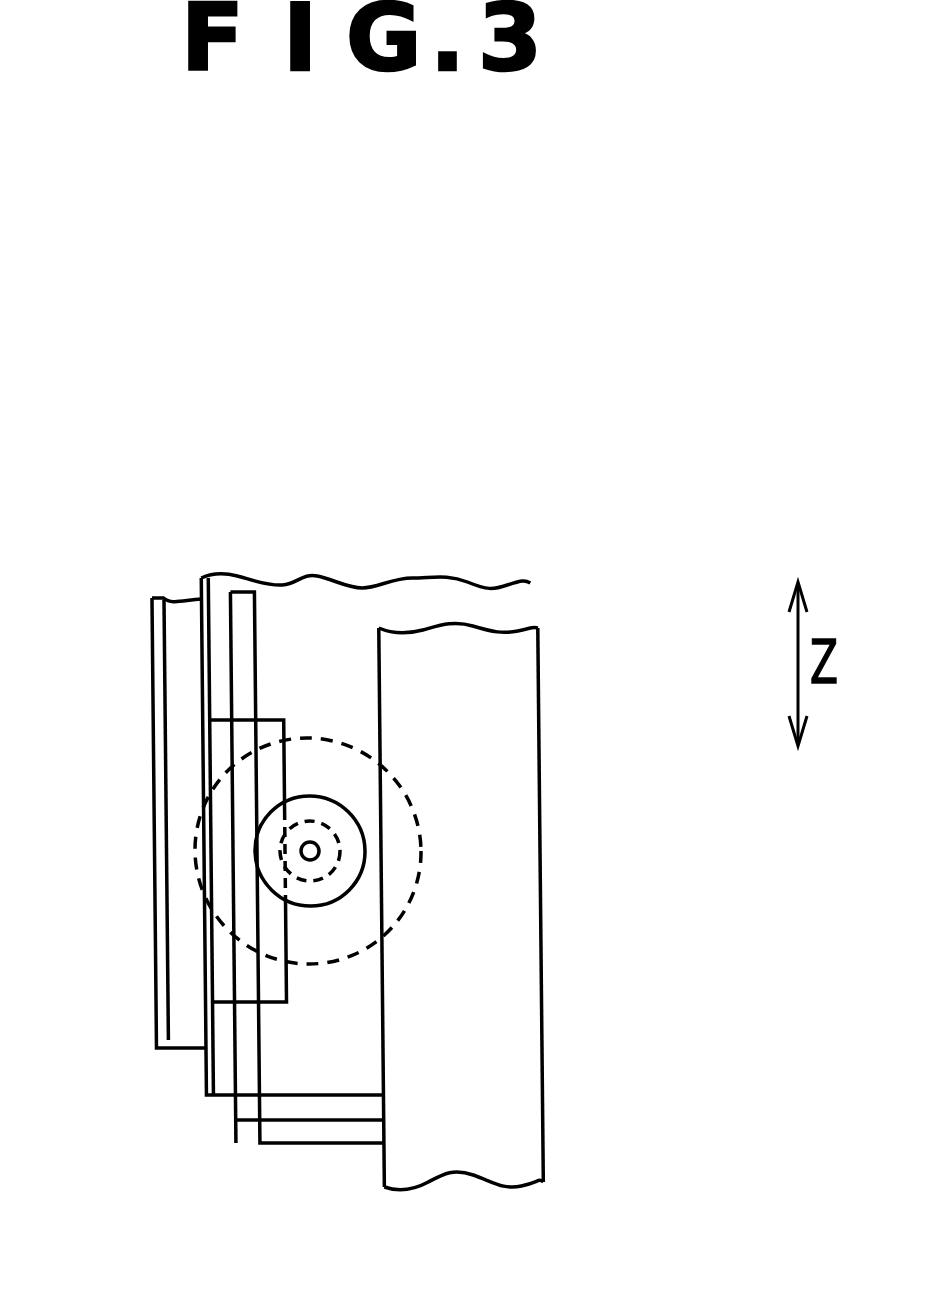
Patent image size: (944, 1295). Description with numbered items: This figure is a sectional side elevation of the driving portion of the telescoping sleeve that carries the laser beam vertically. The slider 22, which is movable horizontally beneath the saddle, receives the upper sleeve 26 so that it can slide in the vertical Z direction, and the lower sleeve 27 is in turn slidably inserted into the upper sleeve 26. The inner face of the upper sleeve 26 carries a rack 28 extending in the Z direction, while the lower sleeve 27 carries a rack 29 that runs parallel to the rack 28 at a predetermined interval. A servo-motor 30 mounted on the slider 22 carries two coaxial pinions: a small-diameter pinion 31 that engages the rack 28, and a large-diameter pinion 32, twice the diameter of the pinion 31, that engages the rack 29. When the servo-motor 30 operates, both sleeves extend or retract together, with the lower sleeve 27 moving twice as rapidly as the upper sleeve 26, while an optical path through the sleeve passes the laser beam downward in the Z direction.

The slider 22 is at (164, 662).
The upper sleeve 26 is at (207, 1082).
The lower sleeve 27 is at (527, 993).
The rack 28 is at (222, 960).
The rack 29 is at (240, 697).
The servo-motor 30 is at (412, 832).
The pinion 31 is at (340, 868).
The pinion 32 is at (348, 813).